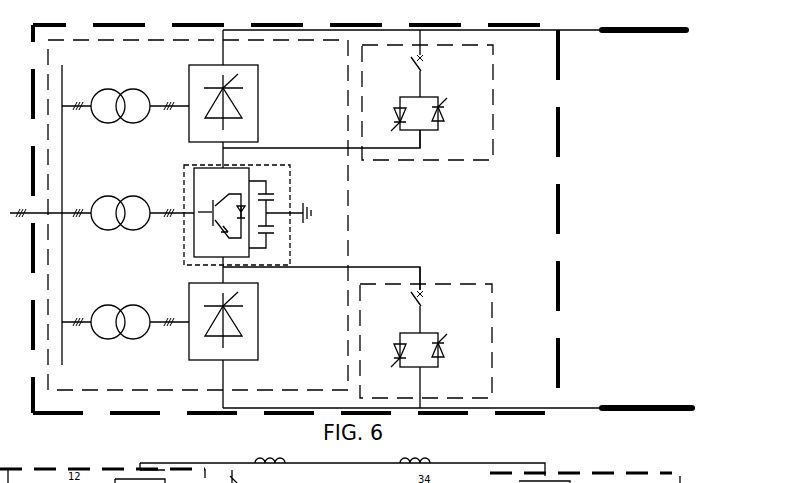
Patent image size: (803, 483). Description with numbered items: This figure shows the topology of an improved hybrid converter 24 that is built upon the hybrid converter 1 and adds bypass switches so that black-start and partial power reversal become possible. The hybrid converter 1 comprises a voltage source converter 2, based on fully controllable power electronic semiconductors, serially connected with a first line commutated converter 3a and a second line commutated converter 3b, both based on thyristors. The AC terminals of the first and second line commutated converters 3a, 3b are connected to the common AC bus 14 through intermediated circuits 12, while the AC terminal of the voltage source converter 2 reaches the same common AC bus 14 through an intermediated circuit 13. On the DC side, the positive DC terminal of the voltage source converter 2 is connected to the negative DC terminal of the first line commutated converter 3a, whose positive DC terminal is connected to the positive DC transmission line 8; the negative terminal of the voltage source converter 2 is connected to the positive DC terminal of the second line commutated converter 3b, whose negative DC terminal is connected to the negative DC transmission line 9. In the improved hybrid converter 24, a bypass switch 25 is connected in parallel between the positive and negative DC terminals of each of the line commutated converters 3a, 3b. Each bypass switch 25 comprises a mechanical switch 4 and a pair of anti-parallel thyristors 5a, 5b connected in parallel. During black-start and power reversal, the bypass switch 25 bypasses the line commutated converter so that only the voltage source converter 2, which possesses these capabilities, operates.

The hybrid converter 1 is at (348, 221).
The voltage source converter 2 is at (291, 176).
The first line commutated converter 3a is at (259, 88).
The second line commutated converter 3b is at (259, 322).
The mechanical switch 4 is at (424, 62).
The thyristor 5a is at (440, 113).
The thyristor 5b is at (395, 111).
The positive DC transmission line 8 is at (655, 34).
The negative DC transmission line 9 is at (654, 406).
The intermediated circuit 12 is at (126, 90).
The intermediated circuit 13 is at (125, 197).
The common AC bus 14 is at (63, 82).
The improved hybrid converter 24 is at (561, 229).
The bypass switch 25 is at (494, 105).